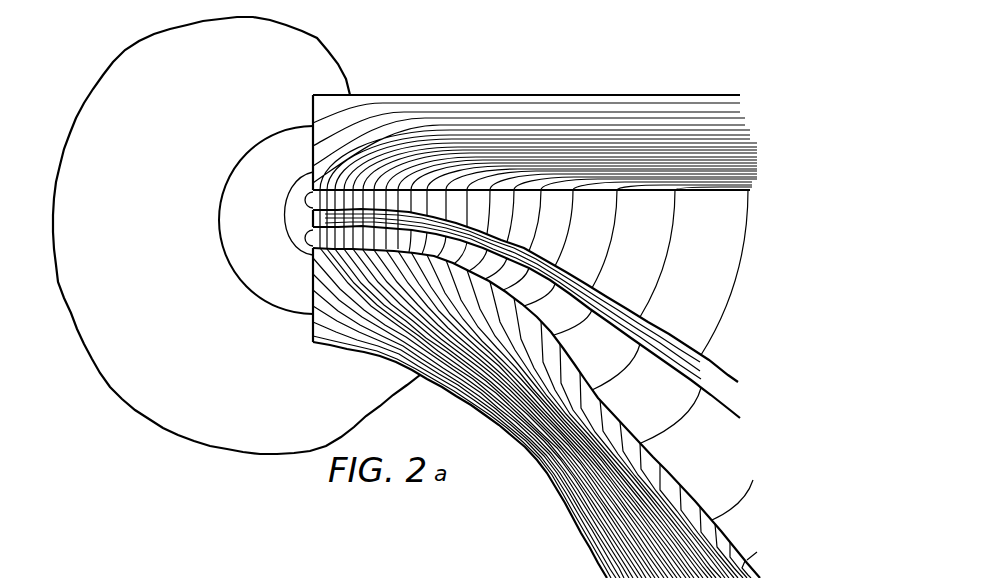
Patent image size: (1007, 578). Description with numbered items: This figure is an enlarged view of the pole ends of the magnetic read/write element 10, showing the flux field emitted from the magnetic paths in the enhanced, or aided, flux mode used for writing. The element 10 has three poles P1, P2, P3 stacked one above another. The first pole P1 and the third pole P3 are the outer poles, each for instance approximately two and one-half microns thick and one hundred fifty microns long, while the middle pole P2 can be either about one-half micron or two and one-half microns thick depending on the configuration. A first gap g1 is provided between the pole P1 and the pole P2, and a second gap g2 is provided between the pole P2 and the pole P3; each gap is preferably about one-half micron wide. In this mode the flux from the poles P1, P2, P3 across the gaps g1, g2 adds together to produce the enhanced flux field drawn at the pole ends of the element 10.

The magnetic read/write element 10 is at (513, 36).
The pole P1 is at (338, 117).
The pole P2 is at (312, 216).
The pole P3 is at (320, 330).
The gap g1 is at (312, 202).
The gap g2 is at (312, 237).